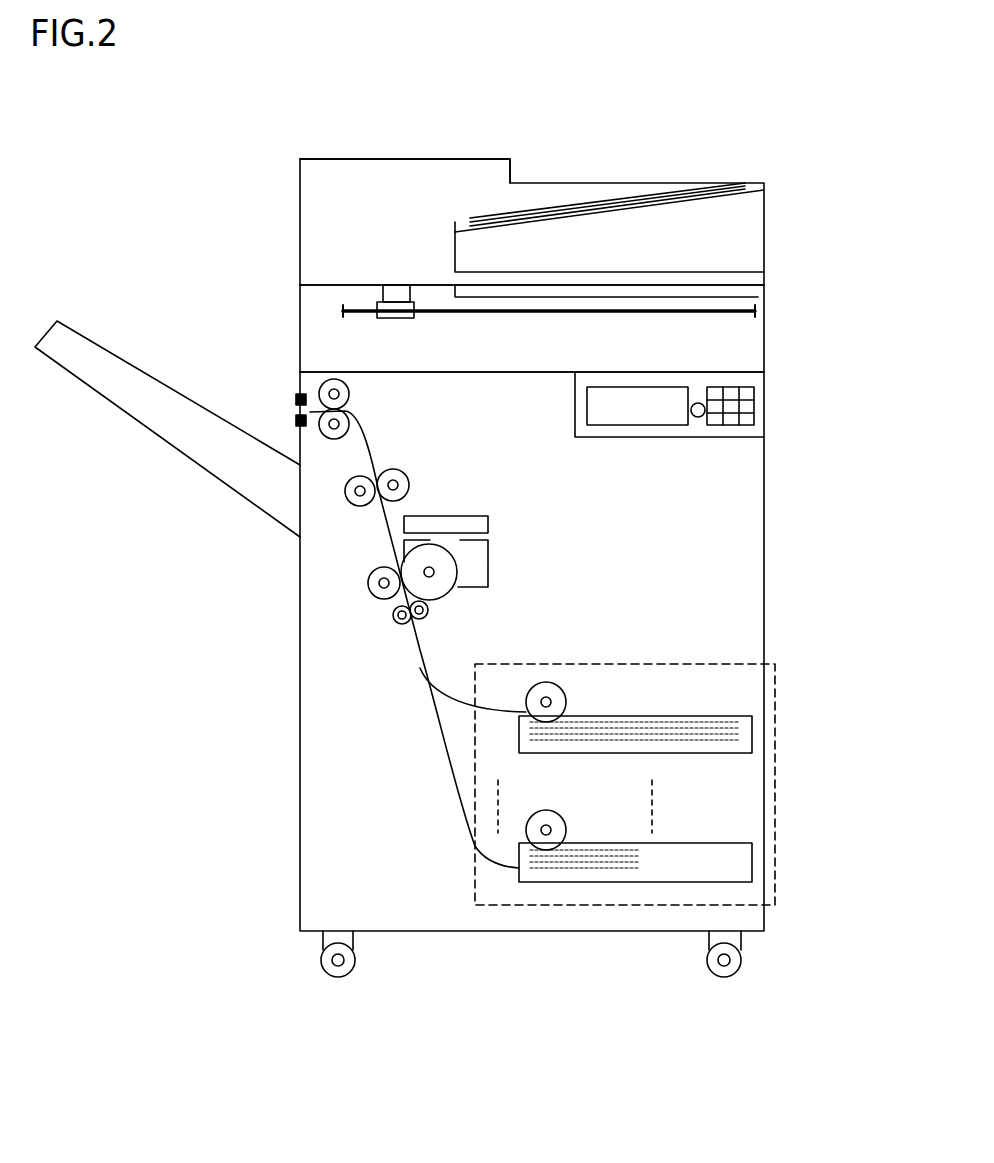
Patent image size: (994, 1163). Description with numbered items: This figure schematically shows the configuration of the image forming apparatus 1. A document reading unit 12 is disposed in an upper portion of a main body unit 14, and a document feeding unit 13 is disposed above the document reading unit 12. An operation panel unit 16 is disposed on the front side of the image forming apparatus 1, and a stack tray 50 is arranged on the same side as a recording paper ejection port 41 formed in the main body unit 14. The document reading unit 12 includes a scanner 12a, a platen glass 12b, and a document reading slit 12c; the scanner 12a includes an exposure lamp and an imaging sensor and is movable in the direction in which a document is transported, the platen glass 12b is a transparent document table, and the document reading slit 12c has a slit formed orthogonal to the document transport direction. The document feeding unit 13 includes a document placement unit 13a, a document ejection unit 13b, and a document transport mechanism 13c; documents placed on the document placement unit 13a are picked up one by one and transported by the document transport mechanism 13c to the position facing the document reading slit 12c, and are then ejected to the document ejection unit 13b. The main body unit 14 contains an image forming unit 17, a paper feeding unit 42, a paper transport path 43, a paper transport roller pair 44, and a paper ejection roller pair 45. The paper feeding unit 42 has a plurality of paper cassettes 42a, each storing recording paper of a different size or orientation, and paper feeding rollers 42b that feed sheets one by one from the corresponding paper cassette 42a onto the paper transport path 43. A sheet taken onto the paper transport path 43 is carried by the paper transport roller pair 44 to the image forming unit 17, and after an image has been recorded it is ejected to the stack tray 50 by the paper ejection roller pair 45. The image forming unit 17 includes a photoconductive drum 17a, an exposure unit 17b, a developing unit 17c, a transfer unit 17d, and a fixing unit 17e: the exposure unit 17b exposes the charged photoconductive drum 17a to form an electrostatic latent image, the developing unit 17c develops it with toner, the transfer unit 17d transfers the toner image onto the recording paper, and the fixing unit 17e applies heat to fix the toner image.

The image forming apparatus 1 is at (237, 193).
The document reading unit 12 is at (300, 318).
The scanner 12a is at (410, 320).
The platen glass 12b is at (754, 297).
The document reading slit 12c is at (402, 285).
The document feeding unit 13 is at (300, 221).
The document placement unit 13a is at (660, 200).
The document ejection unit 13b is at (635, 272).
The document transport mechanism 13c is at (405, 158).
The main body unit 14 is at (765, 625).
The operation panel unit 16 is at (765, 425).
The image forming unit 17 is at (472, 571).
The photoconductive drum 17a is at (442, 598).
The exposure unit 17b is at (490, 522).
The developing unit 17c is at (490, 556).
The transfer unit 17d is at (369, 582).
The fixing unit 17e is at (410, 484).
The recording paper ejection port 41 is at (298, 404).
The paper feeding unit 42 is at (653, 784).
The paper cassette 42a is at (688, 717).
The paper feeding roller 42b is at (568, 704).
The paper transport path 43 is at (410, 620).
The paper transport roller pair 44 is at (393, 614).
The paper ejection roller pair 45 is at (350, 394).
The stack tray 50 is at (187, 452).